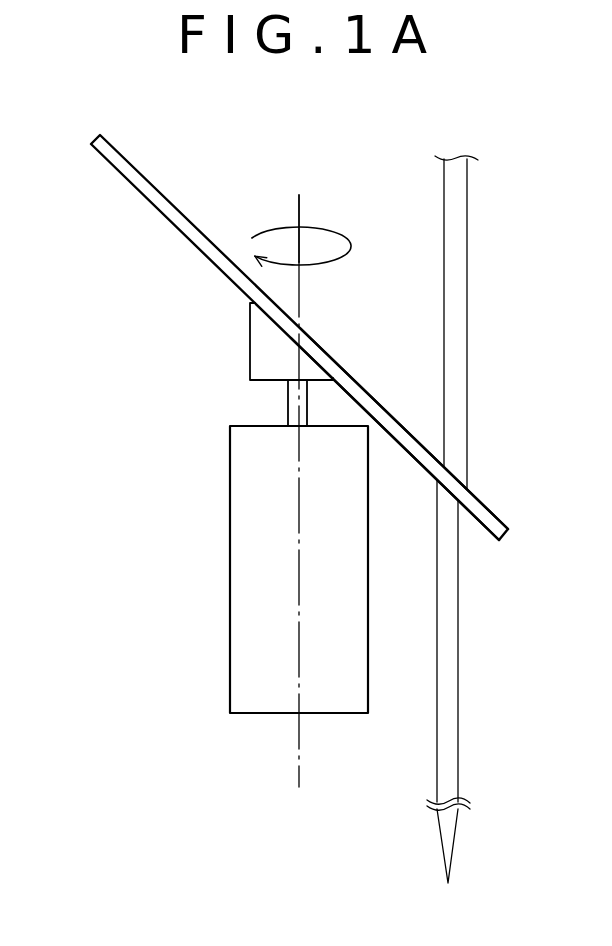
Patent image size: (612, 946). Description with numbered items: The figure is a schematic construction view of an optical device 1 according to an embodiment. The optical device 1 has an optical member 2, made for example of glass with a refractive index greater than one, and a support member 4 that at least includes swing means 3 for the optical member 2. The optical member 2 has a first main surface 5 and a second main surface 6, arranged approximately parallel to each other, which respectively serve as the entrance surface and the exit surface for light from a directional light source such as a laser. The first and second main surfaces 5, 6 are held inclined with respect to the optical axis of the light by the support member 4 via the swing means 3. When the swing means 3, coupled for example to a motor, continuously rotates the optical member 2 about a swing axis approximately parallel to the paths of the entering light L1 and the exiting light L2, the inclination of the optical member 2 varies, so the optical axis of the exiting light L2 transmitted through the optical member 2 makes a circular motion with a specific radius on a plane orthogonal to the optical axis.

The optical device 1 is at (40, 113).
The optical member 2 is at (148, 188).
The swing means 3 is at (263, 346).
The support member 4 is at (243, 670).
The first main surface 5 is at (495, 514).
The second main surface 6 is at (481, 523).
The entering light L1 is at (458, 262).
The exiting light L2 is at (450, 671).